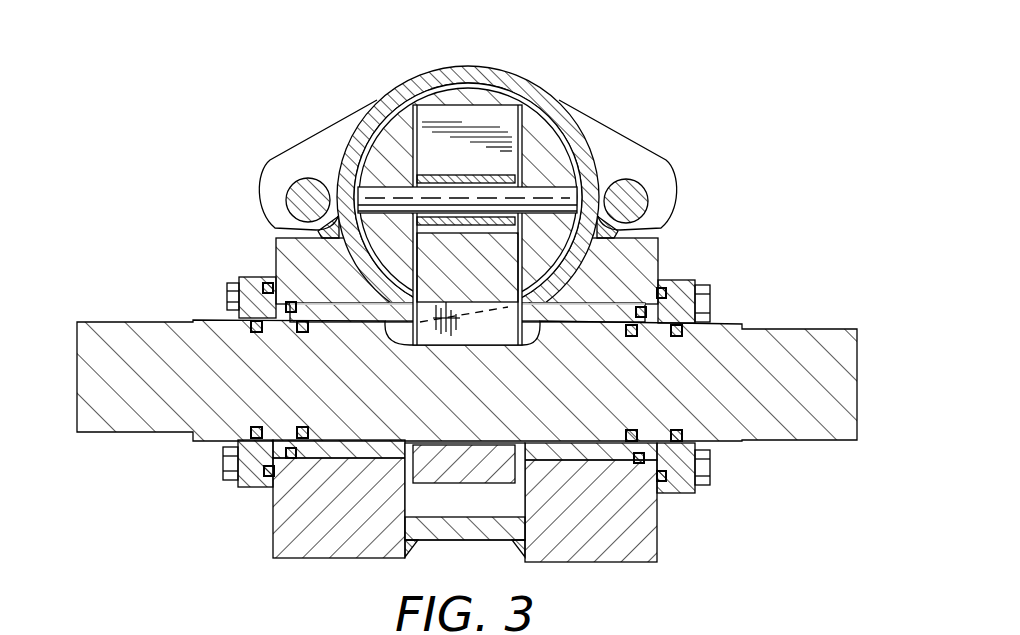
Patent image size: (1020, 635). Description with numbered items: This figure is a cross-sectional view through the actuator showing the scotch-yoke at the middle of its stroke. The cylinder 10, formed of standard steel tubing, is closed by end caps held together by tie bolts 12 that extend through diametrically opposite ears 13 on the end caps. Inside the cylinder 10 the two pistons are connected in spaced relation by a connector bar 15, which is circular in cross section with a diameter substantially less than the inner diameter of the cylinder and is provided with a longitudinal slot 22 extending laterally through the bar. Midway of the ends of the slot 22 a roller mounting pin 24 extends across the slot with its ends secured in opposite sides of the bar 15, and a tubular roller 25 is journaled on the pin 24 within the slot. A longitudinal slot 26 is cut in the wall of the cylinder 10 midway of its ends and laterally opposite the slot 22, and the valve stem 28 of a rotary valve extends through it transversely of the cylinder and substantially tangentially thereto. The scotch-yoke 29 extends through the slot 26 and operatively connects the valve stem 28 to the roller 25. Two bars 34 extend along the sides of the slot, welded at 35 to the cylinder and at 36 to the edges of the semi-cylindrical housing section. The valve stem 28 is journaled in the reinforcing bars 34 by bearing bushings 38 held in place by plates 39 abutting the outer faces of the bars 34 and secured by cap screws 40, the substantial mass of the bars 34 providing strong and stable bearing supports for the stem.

The cylinder 10 is at (538, 97).
The tie bolts 12 is at (299, 195).
The ears 13 is at (667, 185).
The connector bar 15 is at (400, 125).
The longitudinal slot 22 is at (417, 166).
The roller mounting pin 24 is at (456, 197).
The tubular roller 25 is at (505, 180).
The longitudinal slot 26 is at (620, 270).
The valve stem 28 is at (797, 432).
The scotch-yoke 29 is at (487, 290).
The bars 34 is at (282, 527).
The weld 35 is at (282, 233).
The weld 36 is at (417, 546).
The bearing bushings 38 is at (290, 318).
The plates 39 is at (248, 278).
The cap screws 40 is at (700, 302).